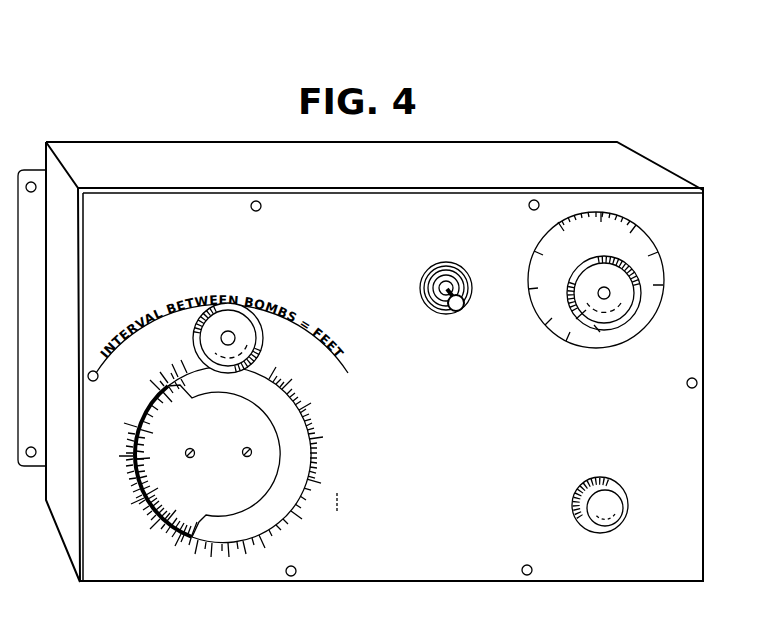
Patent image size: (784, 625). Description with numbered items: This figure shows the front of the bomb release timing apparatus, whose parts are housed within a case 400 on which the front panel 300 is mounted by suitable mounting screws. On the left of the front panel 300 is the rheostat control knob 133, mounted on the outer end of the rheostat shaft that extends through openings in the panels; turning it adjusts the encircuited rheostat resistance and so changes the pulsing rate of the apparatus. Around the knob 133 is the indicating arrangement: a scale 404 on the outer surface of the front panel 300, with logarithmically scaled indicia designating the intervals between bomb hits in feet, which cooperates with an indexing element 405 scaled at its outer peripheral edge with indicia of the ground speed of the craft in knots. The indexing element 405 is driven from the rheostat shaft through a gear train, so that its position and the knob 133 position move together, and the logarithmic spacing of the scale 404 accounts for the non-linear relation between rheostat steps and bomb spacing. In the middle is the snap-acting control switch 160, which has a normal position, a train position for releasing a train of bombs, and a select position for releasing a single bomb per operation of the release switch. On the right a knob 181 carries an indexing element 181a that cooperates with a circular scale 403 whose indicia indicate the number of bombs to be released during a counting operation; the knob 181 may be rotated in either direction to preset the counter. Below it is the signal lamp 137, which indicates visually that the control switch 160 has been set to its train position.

The case 400 is at (660, 178).
The front panel 300 is at (690, 330).
The knob 133 is at (234, 305).
The control switch 160 is at (429, 302).
The circular scale 403 is at (665, 275).
The knob 181 is at (597, 328).
The indexing element 181a is at (575, 317).
The indexing element 405 is at (282, 462).
The scale 404 is at (319, 497).
The signal lamp 137 is at (610, 503).